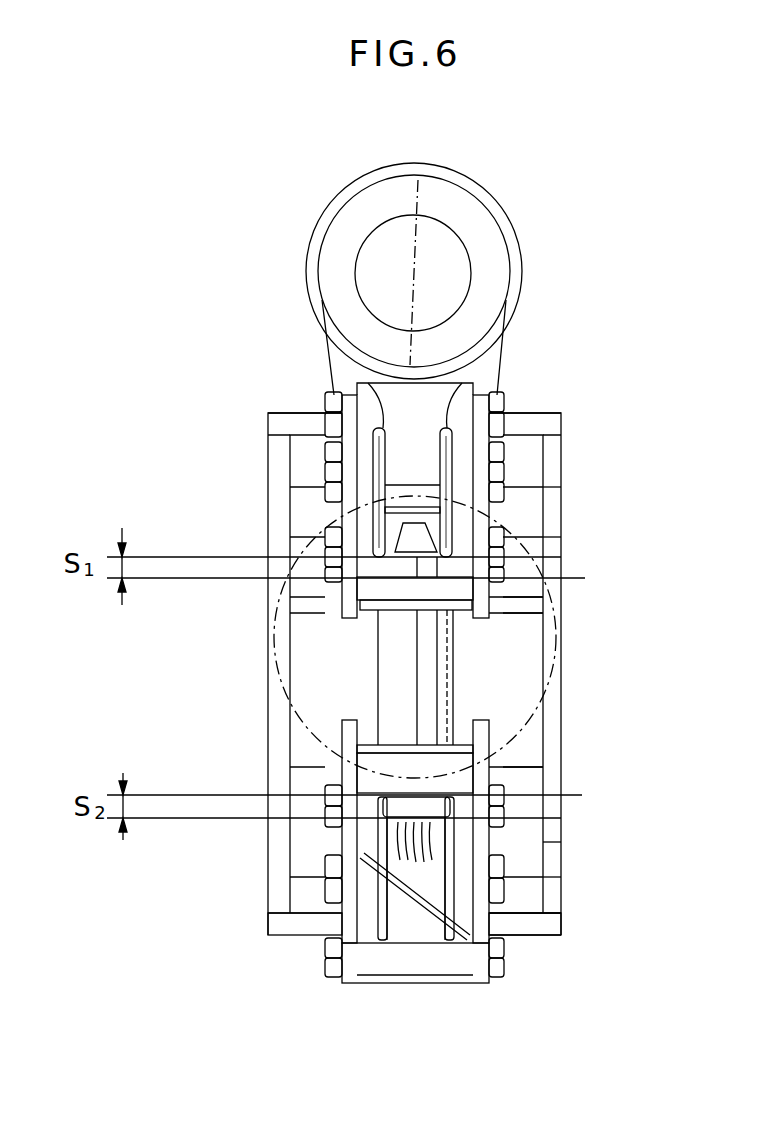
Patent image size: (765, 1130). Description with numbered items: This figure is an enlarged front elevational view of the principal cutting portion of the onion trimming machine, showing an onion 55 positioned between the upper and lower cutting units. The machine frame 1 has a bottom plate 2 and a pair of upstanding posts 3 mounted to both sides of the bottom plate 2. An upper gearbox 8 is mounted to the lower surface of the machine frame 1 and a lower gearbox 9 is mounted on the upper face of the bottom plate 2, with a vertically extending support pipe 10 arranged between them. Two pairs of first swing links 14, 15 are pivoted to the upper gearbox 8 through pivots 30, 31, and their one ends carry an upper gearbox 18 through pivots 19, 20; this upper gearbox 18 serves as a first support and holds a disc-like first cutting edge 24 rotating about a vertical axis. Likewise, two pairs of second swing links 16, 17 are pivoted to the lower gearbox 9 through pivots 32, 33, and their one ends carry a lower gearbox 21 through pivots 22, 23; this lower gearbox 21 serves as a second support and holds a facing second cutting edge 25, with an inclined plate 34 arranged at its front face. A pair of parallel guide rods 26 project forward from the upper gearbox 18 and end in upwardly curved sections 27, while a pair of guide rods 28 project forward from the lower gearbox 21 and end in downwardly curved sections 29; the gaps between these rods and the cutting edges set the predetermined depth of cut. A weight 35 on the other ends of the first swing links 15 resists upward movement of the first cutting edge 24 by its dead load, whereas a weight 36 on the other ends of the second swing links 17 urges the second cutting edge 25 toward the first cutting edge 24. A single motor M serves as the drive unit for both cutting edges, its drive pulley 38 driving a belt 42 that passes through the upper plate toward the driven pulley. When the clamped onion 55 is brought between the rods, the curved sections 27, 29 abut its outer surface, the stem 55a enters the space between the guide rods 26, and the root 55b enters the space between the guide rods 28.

The machine frame 1 is at (249, 944).
The bottom plate 2 is at (553, 930).
The post 3 is at (278, 594).
The upper gearbox 8 is at (413, 592).
The lower gearbox 9 is at (372, 763).
The support pipe 10 is at (455, 680).
The first swing link 14 is at (337, 413).
The first swing link 15 is at (340, 612).
The second swing link 16 is at (350, 980).
The second swing link 17 is at (340, 762).
The upper gearbox 18 is at (465, 390).
The pivot 19 is at (330, 400).
The pivot 20 is at (337, 500).
The lower gearbox 21 is at (545, 930).
The pivot 22 is at (330, 958).
The pivot 23 is at (330, 878).
The first cutting edge 24 is at (525, 578).
The second cutting edge 25 is at (533, 795).
The guide rod 26 is at (425, 523).
The curved section 27 is at (380, 427).
The guide rod 28 is at (378, 840).
The curved section 29 is at (390, 912).
The pivot 30 is at (327, 467).
The pivot 31 is at (333, 545).
The pivot 32 is at (290, 913).
The pivot 33 is at (330, 800).
The inclined plate 34 is at (382, 918).
The weight 35 is at (525, 505).
The weight 36 is at (525, 858).
The drive pulley 38 is at (333, 229).
The belt 42 is at (330, 372).
The onion 55 is at (558, 730).
The stem 55a is at (345, 515).
The root 55b is at (432, 920).
The motor M is at (487, 187).